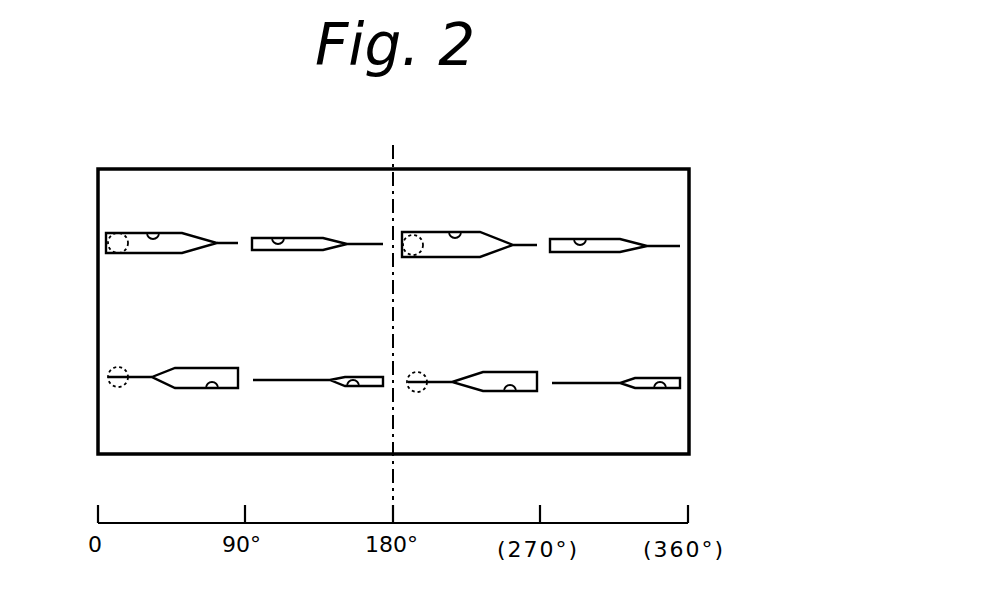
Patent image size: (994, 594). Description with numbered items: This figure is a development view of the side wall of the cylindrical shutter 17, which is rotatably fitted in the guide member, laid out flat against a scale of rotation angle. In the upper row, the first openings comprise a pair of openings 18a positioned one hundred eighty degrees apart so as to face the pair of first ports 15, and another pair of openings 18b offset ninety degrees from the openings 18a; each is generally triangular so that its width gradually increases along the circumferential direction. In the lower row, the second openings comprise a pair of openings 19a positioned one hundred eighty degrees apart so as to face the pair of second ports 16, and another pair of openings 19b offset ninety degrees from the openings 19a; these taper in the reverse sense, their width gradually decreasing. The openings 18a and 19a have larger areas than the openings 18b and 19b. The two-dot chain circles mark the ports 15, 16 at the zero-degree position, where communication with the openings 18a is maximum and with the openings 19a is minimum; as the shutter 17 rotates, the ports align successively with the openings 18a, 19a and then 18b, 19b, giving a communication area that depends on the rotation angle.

The first ports 15 is at (108, 240).
The second ports 16 is at (113, 388).
The shutter 17 is at (678, 218).
The openings 18a is at (154, 236).
The openings 18b is at (279, 240).
The openings 19a is at (212, 390).
The openings 19b is at (353, 390).